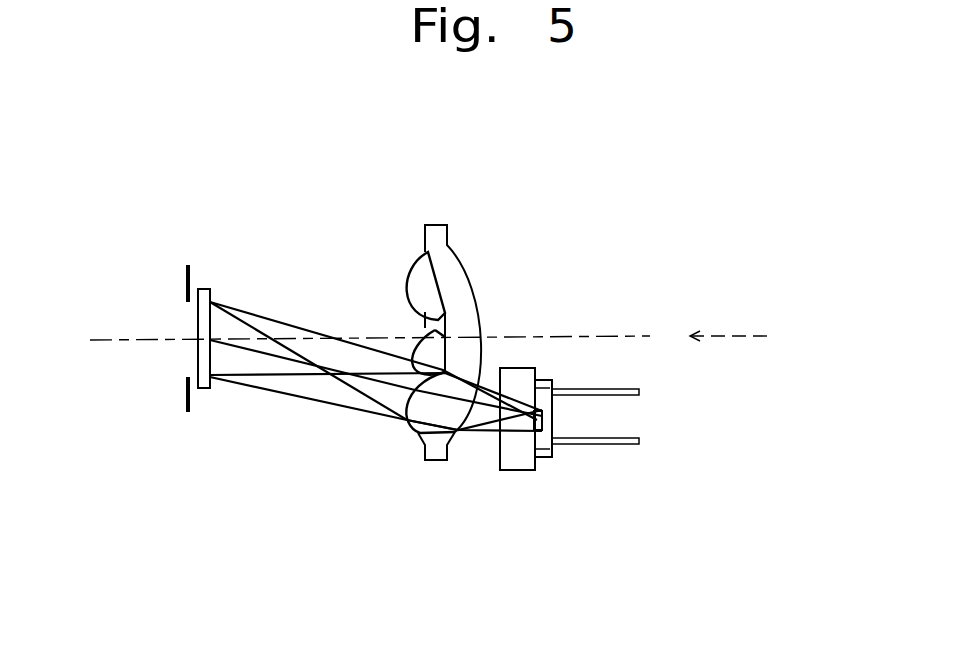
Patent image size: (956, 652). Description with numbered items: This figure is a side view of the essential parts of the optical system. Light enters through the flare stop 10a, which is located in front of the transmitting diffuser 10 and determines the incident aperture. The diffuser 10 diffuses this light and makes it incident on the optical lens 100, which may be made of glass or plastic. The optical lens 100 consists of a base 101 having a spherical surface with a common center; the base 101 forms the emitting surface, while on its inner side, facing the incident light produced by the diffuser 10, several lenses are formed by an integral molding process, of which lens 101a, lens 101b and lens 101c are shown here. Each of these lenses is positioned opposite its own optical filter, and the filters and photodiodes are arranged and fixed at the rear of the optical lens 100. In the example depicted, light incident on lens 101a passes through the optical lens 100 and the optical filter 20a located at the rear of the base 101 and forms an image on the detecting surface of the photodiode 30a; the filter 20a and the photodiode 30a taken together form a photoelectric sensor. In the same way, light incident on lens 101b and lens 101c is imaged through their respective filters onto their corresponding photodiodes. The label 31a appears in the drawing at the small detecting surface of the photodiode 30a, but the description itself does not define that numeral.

The transmitting diffuser 10 is at (204, 288).
The flare stop 10a is at (176, 398).
The optical lens 100 is at (434, 304).
The base 101 is at (460, 302).
The lens 101a is at (407, 422).
The lens 101b is at (410, 357).
The lens 101c is at (412, 272).
The optical filter 20a is at (522, 455).
The photodiode 30a is at (560, 413).
The detecting surface 31a is at (557, 385).